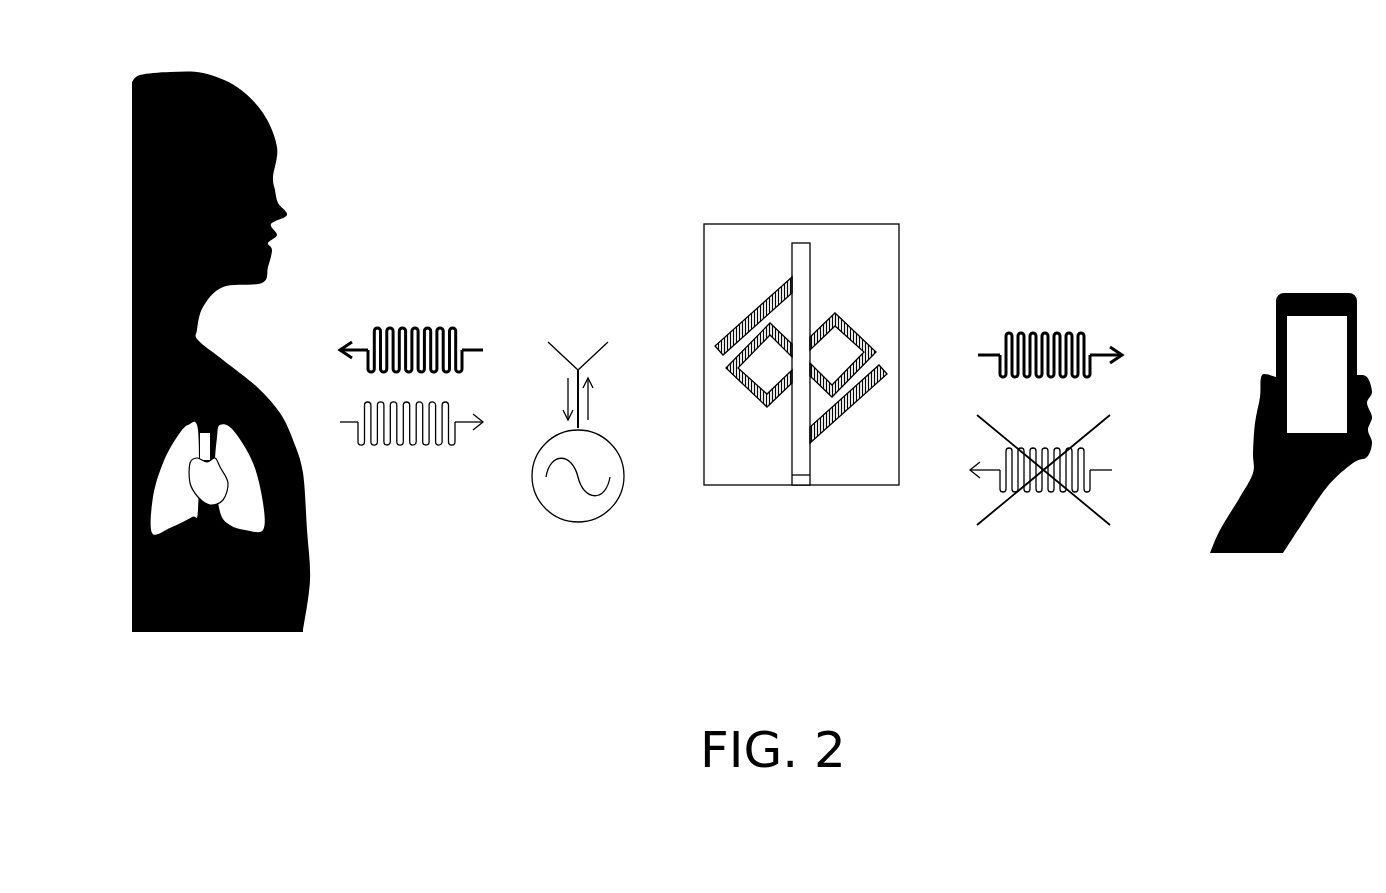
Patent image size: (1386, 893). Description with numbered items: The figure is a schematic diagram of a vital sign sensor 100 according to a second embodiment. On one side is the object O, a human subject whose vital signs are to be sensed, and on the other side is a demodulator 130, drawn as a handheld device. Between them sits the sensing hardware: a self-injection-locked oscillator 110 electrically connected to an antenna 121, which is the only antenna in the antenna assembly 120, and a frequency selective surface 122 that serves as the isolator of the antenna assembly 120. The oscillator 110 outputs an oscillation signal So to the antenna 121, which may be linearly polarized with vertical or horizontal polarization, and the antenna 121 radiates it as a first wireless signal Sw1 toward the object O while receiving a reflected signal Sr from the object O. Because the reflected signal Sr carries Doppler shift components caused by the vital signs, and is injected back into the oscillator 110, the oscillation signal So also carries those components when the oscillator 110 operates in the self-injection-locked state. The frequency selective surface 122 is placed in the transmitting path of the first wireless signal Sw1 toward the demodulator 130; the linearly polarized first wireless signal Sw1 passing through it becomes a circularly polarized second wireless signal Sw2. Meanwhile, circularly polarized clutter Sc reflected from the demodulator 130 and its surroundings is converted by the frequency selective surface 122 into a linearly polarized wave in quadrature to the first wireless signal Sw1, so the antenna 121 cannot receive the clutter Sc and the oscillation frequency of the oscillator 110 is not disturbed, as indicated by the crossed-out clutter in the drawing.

The vital sign sensor 100 is at (438, 128).
The self-injection-locked (SIL) oscillator 110 is at (578, 522).
The antenna assembly 120 is at (622, 260).
The antenna 121 is at (562, 352).
The frequency selective surface (FSS) 122 is at (772, 232).
The demodulator 130 is at (1315, 290).
The object O is at (272, 118).
The first wireless signal Sw1 is at (400, 326).
The reflected signal Sr is at (398, 448).
The oscillation signal So is at (605, 401).
The second wireless signal Sw2 is at (1042, 330).
The clutter Sc is at (1037, 492).